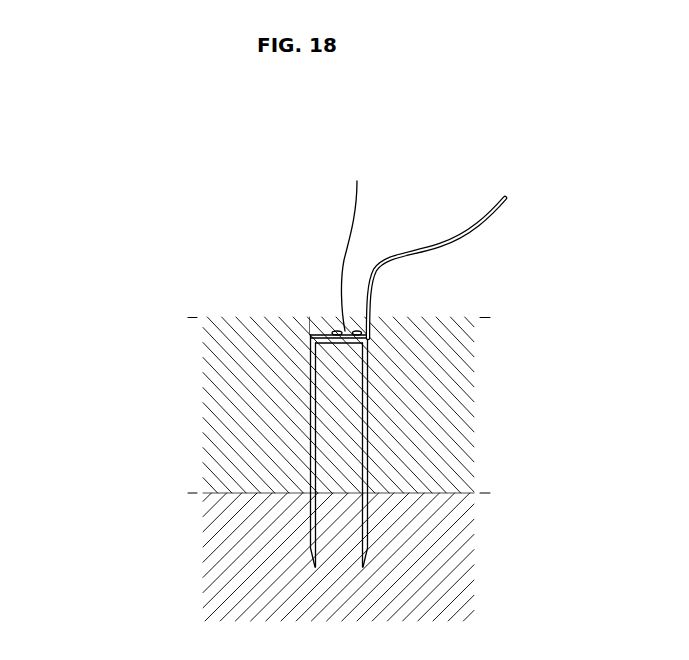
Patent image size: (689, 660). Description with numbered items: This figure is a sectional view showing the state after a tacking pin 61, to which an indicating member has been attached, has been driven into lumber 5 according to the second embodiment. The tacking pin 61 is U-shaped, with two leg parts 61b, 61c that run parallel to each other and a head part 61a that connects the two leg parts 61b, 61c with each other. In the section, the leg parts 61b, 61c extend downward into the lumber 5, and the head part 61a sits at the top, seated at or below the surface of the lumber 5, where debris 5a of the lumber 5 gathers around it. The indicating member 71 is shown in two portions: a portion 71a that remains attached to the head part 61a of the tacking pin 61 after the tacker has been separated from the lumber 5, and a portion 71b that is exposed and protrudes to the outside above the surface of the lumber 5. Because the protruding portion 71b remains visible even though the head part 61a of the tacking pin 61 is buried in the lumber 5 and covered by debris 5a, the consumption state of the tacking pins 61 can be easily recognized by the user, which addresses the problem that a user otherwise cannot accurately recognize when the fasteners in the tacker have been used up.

The lumber 5 is at (450, 418).
The debris 5a is at (316, 332).
The tacking pin 61 is at (206, 449).
The head part 61a is at (338, 343).
The leg part 61b is at (311, 400).
The leg part 61c is at (361, 442).
The indicating member portion 71 is at (421, 224).
The portion of the indicating member 71a is at (359, 242).
The portion of the indicating member 71b is at (455, 238).